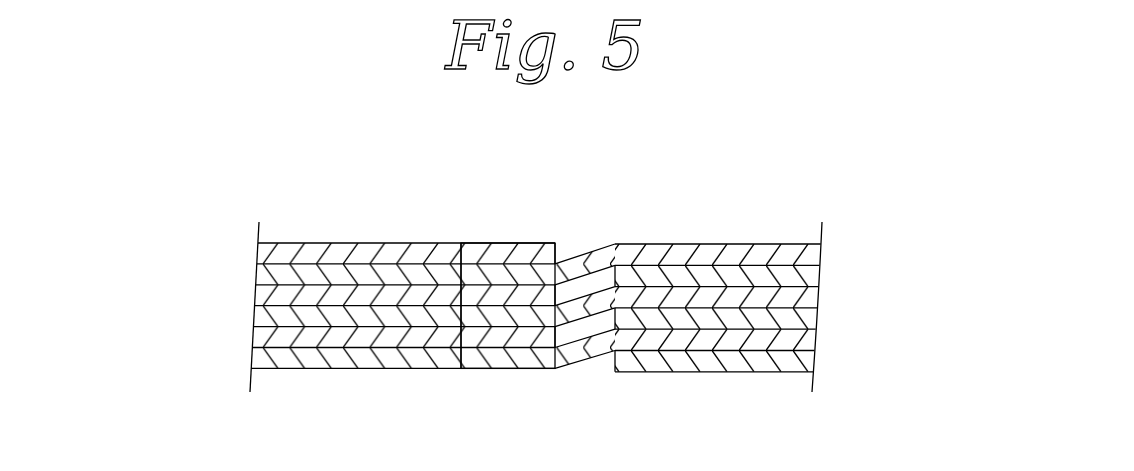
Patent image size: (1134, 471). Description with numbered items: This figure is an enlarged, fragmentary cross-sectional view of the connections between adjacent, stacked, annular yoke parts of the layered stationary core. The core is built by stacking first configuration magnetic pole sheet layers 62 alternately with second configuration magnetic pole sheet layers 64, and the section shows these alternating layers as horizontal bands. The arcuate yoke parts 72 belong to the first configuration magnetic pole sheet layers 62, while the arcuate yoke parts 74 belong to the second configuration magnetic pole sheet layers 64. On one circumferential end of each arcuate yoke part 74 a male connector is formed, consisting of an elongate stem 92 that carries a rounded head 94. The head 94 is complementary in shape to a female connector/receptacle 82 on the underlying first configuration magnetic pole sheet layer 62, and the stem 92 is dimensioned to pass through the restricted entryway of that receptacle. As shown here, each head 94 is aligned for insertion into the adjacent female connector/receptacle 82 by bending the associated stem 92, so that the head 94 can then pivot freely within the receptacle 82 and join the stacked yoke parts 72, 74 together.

The first configuration magnetic pole sheet layer 62 is at (535, 364).
The second configuration magnetic pole sheet layer 64 is at (527, 257).
The arcuate yoke part 72 is at (255, 275).
The arcuate yoke part 74 is at (255, 250).
The female connector/receptacle 82 is at (508, 342).
The stem 92 is at (606, 265).
The head 94 is at (521, 267).